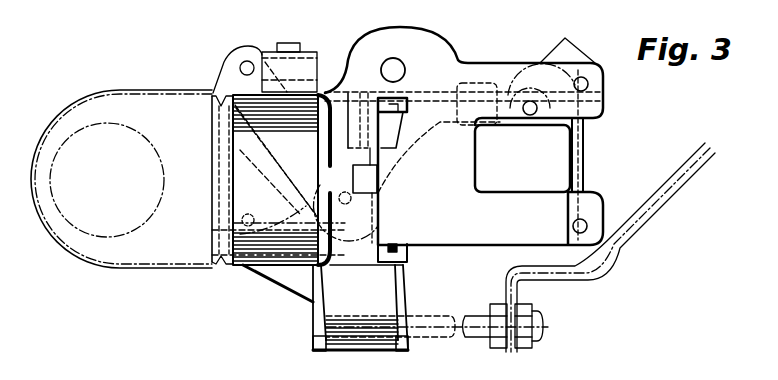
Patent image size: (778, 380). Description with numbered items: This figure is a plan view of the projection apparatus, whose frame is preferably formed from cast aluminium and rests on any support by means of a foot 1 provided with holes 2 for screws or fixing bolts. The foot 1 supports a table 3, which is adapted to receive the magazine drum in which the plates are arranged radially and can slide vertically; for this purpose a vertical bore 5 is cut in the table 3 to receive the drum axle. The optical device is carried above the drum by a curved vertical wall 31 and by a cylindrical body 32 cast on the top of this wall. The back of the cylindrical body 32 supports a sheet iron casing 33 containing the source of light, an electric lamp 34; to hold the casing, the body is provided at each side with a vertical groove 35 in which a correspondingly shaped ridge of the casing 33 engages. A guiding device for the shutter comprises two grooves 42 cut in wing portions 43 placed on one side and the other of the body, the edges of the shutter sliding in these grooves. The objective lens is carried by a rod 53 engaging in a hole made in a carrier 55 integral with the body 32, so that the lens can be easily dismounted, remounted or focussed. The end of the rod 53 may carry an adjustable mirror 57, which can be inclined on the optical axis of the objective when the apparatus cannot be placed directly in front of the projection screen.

The foot 1 is at (235, 58).
The holes 2 is at (240, 70).
The table 3 is at (458, 136).
The vertical bore 5 is at (406, 66).
The curved vertical wall 31 is at (274, 192).
The cylindrical body 32 is at (278, 198).
The sheet iron casing 33 is at (105, 90).
The electric lamp 34 is at (150, 143).
The vertical groove 35 is at (213, 265).
The grooves 42 is at (393, 247).
The wing portions 43 is at (408, 255).
The rod 53 is at (430, 338).
The carrier 55 is at (360, 308).
The adjustable mirror 57 is at (665, 180).